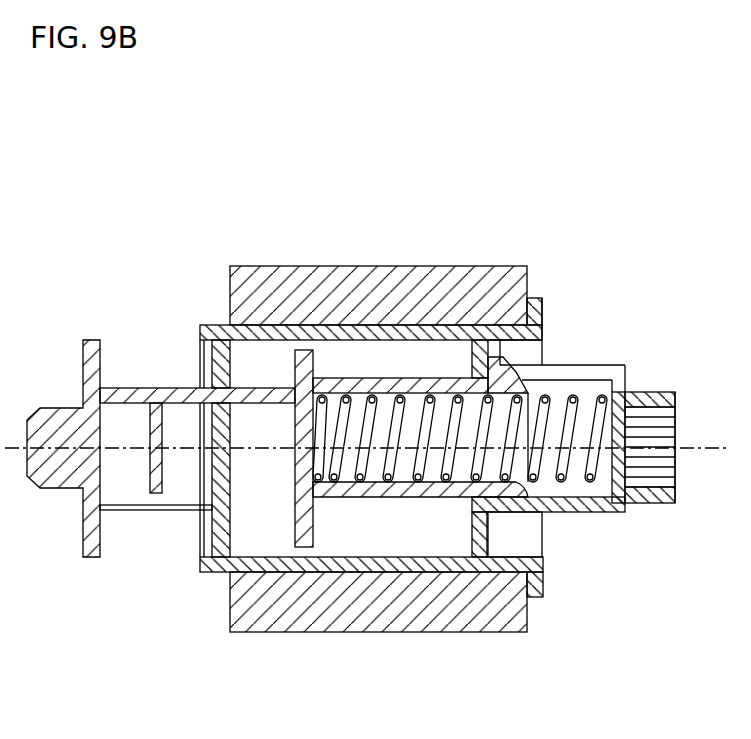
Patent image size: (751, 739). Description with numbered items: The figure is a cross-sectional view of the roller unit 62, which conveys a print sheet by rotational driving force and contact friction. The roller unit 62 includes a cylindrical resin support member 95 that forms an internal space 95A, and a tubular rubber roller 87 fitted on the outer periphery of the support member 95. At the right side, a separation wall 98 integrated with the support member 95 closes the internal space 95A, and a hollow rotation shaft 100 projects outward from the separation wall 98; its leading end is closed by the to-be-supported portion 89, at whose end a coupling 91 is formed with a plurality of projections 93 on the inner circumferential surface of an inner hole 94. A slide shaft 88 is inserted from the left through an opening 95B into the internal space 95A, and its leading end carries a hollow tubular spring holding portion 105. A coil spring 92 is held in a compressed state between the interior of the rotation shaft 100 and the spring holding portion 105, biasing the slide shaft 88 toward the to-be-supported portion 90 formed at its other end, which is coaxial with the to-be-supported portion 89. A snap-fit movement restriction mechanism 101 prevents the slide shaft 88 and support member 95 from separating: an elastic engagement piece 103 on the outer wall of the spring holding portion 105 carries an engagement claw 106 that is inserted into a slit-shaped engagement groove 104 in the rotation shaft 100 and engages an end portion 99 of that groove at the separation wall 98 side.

The roller unit 62 is at (577, 242).
The rubber roller 87 is at (305, 266).
The slide shaft 88 is at (152, 387).
The to-be-supported portion 89 is at (650, 392).
The to-be-supported portion 90 is at (53, 407).
The coupling 91 is at (694, 454).
The coil spring 92 is at (573, 397).
The projections 93 is at (668, 423).
The inner hole 94 is at (660, 393).
The support member 95 is at (207, 323).
The internal space 95A is at (387, 543).
The opening 95B is at (200, 537).
The separation wall 98 is at (490, 530).
The end portion 99 is at (485, 355).
The rotation shaft 100 is at (590, 513).
The movement restriction mechanism 101 is at (538, 298).
The elastic engagement piece 103 is at (438, 378).
The engagement groove 104 is at (597, 365).
The spring holding portion 105 is at (340, 497).
The engagement claw 106 is at (500, 375).